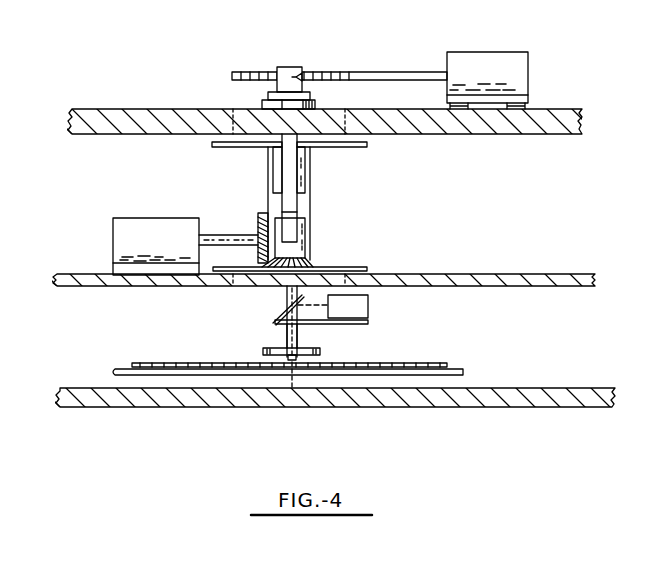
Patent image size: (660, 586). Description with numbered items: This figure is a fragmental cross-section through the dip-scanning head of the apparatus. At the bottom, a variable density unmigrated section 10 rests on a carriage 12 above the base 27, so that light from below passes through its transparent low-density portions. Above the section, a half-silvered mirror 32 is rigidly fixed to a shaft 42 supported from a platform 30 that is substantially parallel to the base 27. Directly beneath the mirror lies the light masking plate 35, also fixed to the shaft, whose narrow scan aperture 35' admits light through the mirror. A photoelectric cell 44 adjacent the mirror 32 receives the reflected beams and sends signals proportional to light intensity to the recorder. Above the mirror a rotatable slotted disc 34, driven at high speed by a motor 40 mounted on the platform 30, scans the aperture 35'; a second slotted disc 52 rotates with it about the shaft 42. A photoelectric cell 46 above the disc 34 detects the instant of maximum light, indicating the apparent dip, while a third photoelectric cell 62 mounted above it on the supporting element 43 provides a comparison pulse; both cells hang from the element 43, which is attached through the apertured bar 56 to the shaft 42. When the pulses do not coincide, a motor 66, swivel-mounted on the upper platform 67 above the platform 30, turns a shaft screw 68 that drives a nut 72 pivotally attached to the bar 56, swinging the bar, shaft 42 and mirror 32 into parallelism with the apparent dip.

The variable density unmigrated section 10 is at (175, 363).
The carriage 12 is at (463, 372).
The base 27 is at (560, 388).
The platform 30 is at (512, 274).
The half-silvered mirror 32 is at (280, 315).
The rotatable slotted disc 34 is at (345, 267).
The light masking plate 35 is at (322, 350).
The scan aperture 35' is at (269, 356).
The motor 40 is at (147, 218).
The shaft 42 is at (300, 333).
The supporting element 43 is at (297, 203).
The photoelectric cell 44 is at (368, 305).
The photoelectric cell 46 is at (306, 240).
The second slotted disc 52 is at (347, 147).
The apertured bar 56 is at (310, 97).
The third photoelectric cell 62 is at (310, 177).
The motor 66 is at (488, 52).
The upper platform 67 is at (120, 109).
The shaft screw 68 is at (382, 72).
The nut 72 is at (292, 67).